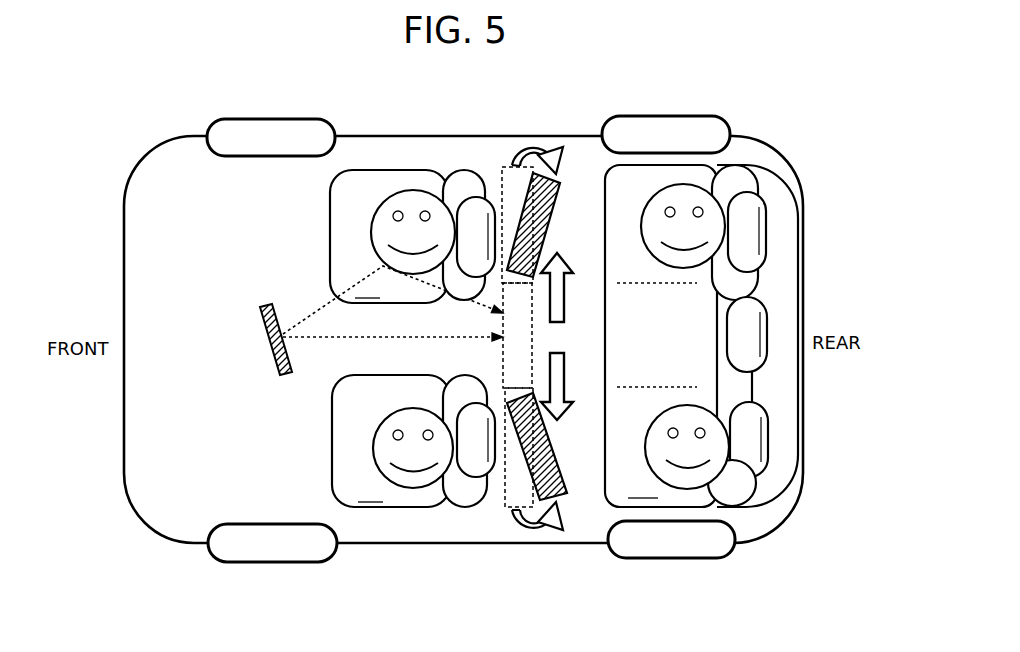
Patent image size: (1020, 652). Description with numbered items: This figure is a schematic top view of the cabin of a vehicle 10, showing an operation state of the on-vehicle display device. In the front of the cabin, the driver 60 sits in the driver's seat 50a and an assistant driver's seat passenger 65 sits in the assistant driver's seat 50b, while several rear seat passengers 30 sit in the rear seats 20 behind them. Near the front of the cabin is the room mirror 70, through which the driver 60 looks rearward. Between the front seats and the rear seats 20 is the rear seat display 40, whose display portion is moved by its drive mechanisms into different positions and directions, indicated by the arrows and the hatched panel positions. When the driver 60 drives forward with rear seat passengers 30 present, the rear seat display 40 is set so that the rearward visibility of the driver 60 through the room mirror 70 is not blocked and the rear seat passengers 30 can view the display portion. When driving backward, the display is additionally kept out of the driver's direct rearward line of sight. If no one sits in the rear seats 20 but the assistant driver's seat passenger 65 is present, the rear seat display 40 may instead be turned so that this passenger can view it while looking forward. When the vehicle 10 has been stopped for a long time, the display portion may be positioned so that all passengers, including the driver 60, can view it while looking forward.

The vehicle 10 is at (126, 205).
The rear seats 20 is at (790, 172).
The rear seat passengers 30 is at (713, 170).
The rear seat display 40 is at (560, 175).
The driver's seat 50a is at (390, 170).
The assistant driver's seat 50b is at (372, 510).
The driver 60 is at (376, 204).
The assistant driver's seat passenger 65 is at (407, 505).
The room mirror 70 is at (262, 332).